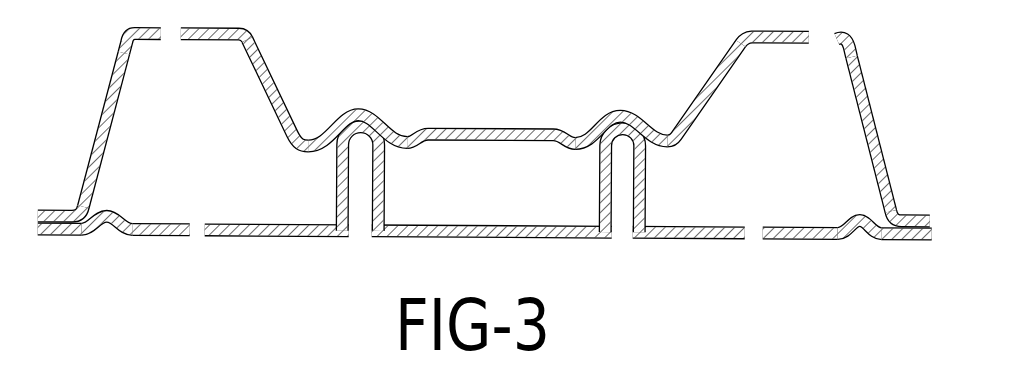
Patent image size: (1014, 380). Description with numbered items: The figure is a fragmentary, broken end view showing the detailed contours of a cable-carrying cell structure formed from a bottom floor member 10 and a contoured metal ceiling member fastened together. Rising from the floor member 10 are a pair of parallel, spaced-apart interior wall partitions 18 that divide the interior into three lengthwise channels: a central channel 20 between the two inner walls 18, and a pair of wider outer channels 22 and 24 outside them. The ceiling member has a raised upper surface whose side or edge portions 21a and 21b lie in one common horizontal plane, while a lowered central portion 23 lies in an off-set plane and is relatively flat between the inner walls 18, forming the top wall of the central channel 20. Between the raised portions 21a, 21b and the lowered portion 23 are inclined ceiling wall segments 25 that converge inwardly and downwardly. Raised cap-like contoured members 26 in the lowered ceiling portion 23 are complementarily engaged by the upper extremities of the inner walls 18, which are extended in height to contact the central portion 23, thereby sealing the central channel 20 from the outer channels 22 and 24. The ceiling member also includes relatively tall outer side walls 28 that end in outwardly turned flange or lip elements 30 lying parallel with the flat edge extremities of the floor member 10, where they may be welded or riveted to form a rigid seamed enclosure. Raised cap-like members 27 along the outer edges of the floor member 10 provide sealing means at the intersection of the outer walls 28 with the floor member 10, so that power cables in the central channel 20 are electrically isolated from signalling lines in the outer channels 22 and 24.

The bottom floor member 10 is at (242, 238).
The interior wall partitions 18 is at (335, 203).
The central channel 20 is at (436, 222).
The side portion of raised upper surface 21a is at (217, 43).
The side portion of raised upper surface 21b is at (755, 47).
The outer channel 22 is at (106, 131).
The lowered central portion 23 is at (513, 128).
The outer channel 24 is at (868, 135).
The inclined ceiling wall segments 25 is at (293, 110).
The raised cap-like contoured members 26 is at (362, 107).
The raised cap-like contoured members 27 is at (110, 210).
The outer side walls 28 is at (108, 75).
The flange or lip elements 30 is at (47, 208).